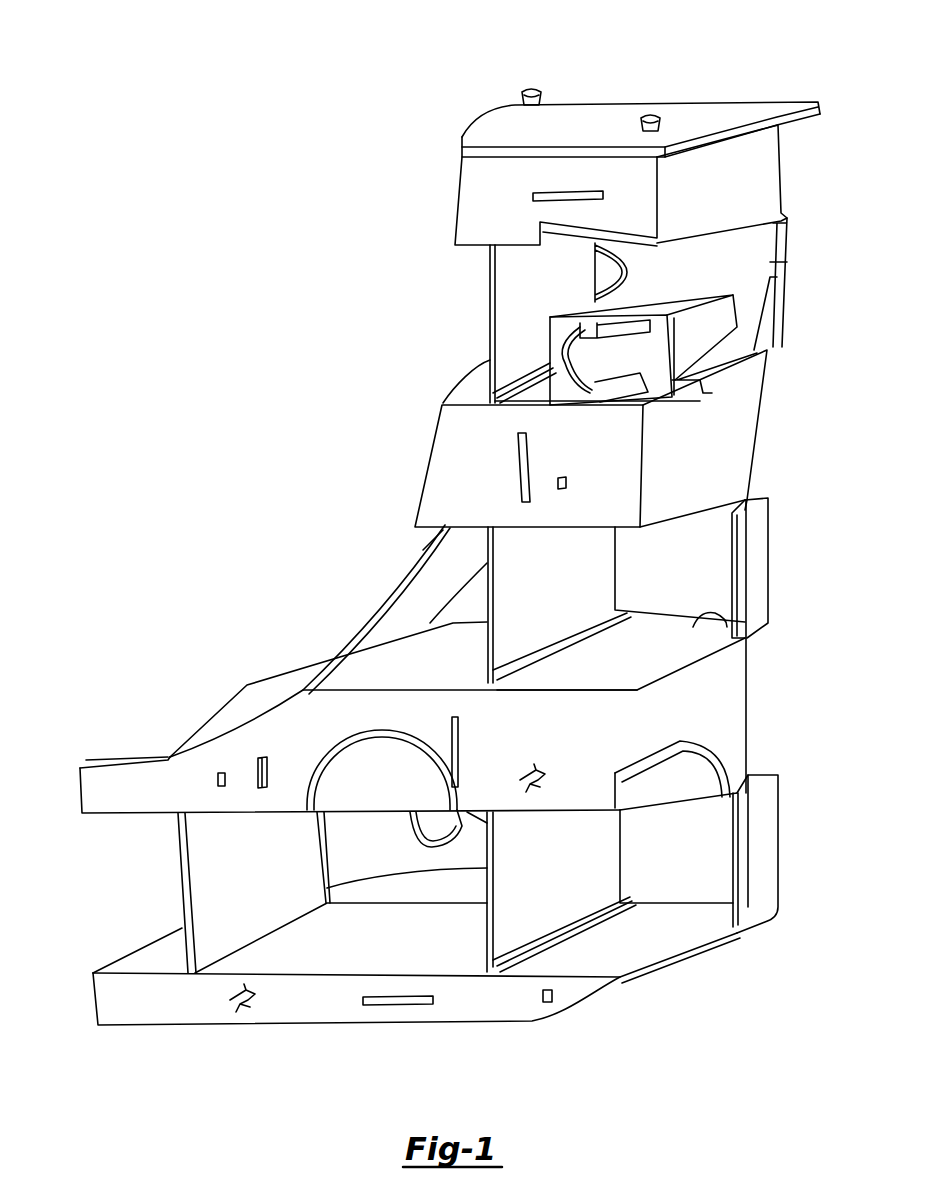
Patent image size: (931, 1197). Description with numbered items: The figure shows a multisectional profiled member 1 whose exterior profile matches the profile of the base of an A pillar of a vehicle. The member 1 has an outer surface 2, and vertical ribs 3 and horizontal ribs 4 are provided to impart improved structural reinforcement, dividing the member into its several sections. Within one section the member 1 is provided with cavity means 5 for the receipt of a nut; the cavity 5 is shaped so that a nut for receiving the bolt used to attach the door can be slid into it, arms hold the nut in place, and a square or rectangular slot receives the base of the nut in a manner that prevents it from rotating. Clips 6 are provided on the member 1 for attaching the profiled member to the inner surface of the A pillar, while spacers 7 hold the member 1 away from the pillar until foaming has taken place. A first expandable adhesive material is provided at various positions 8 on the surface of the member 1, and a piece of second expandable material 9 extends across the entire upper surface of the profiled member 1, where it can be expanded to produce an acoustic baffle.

The multisectional profiled member 1 is at (767, 198).
The outer surface 2 is at (488, 290).
The vertical ribs 3 is at (530, 402).
The horizontal ribs 4 is at (593, 583).
The cavity means 5 is at (710, 318).
The clips 6 is at (233, 1003).
The spacers 7 is at (558, 480).
The positions of first expandable adhesive material 8 is at (763, 585).
The second expandable material 9 is at (608, 110).